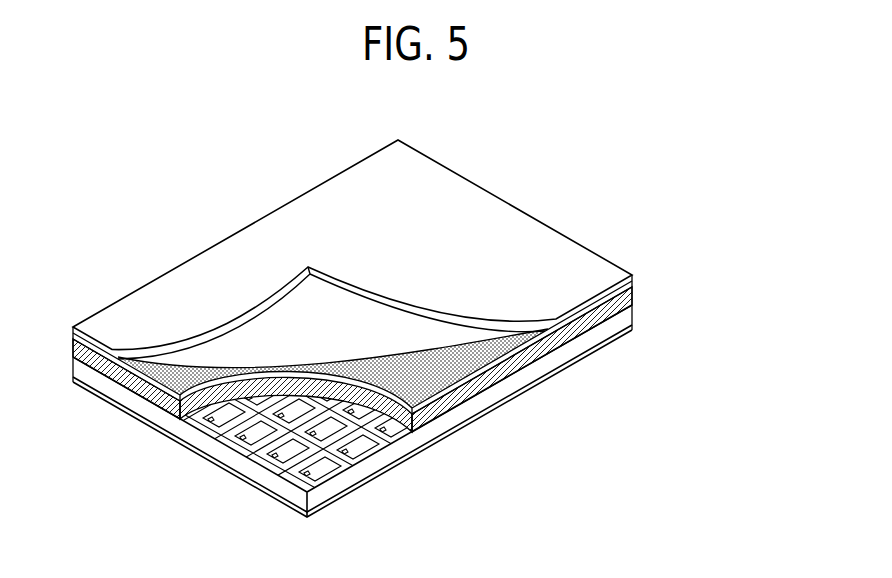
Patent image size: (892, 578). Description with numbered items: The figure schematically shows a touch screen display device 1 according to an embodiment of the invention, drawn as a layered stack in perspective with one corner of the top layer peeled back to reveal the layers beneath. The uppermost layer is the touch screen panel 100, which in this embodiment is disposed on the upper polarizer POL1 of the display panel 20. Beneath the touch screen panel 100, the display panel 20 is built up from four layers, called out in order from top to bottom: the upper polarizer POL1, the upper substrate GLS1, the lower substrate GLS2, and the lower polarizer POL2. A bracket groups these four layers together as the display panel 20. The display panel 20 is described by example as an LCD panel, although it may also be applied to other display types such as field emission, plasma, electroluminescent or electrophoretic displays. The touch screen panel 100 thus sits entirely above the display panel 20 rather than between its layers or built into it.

The touch screen display device 1 is at (274, 119).
The touch screen panel 100 is at (633, 277).
The display panel 20 is at (747, 275).
The upper polarizer POL1 is at (633, 282).
The upper substrate GLS1 is at (633, 290).
The lower substrate GLS2 is at (633, 312).
The lower polarizer POL2 is at (633, 328).